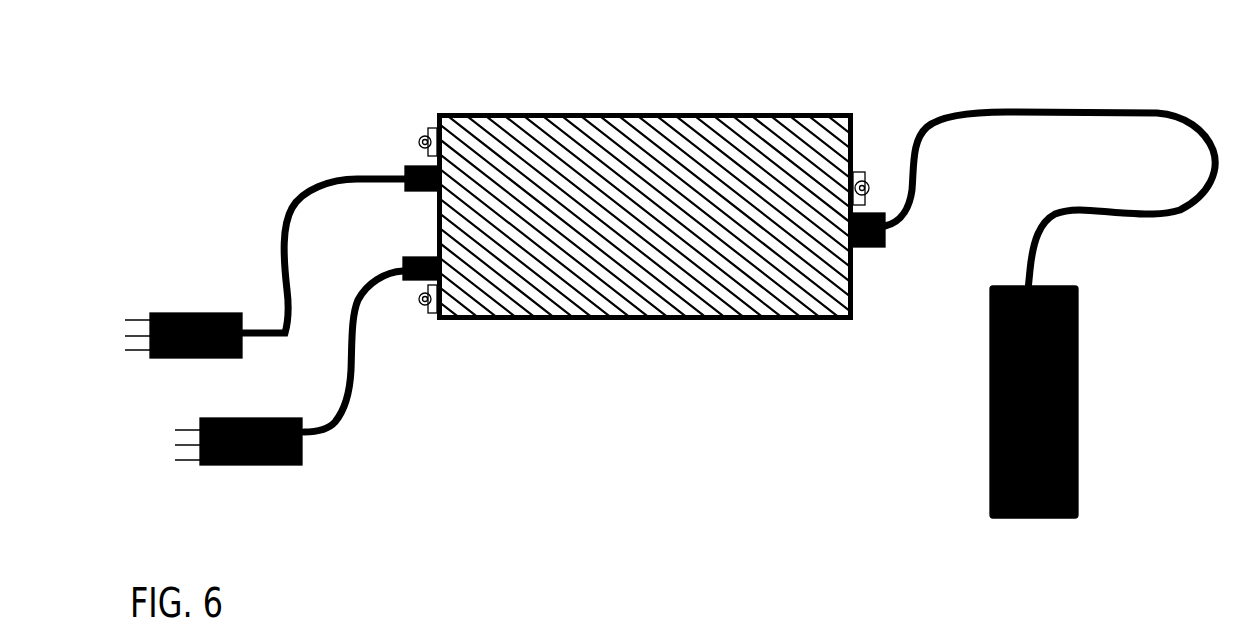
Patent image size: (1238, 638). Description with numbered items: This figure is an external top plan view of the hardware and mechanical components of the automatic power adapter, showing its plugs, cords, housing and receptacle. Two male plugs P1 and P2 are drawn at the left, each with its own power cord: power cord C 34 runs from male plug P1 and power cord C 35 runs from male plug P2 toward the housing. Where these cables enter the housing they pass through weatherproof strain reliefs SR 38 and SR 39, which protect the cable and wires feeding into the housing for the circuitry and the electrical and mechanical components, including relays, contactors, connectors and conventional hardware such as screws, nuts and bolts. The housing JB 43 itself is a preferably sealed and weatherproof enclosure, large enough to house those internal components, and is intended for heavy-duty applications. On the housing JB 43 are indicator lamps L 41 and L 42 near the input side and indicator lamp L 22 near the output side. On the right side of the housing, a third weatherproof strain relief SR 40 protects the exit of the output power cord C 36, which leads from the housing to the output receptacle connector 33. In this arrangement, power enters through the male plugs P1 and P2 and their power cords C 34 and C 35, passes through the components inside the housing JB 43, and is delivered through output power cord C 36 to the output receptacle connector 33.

The housing 43 is at (677, 113).
The weatherproof strain relief 38 is at (413, 162).
The weatherproof strain relief 39 is at (415, 252).
The weatherproof strain relief 40 is at (867, 247).
The power cord 34 is at (302, 188).
The power cord 35 is at (353, 385).
The output power cord 36 is at (1152, 105).
The indicator lamp 41 is at (427, 128).
The indicator lamp 42 is at (423, 310).
The indicator lamp 22 is at (862, 173).
The male plug P1 is at (195, 313).
The male plug P2 is at (220, 418).
The output receptacle connector 33 is at (1088, 377).